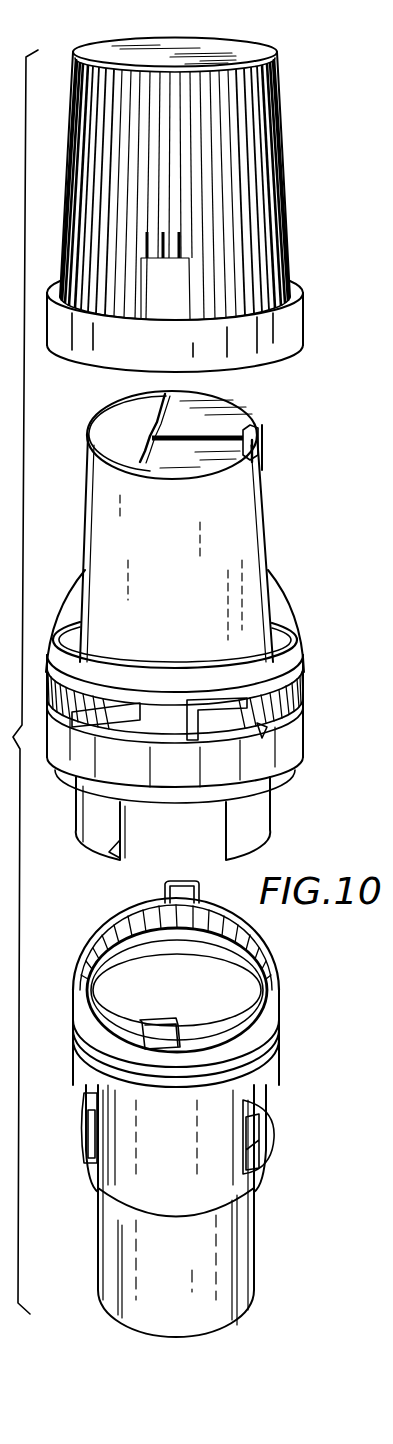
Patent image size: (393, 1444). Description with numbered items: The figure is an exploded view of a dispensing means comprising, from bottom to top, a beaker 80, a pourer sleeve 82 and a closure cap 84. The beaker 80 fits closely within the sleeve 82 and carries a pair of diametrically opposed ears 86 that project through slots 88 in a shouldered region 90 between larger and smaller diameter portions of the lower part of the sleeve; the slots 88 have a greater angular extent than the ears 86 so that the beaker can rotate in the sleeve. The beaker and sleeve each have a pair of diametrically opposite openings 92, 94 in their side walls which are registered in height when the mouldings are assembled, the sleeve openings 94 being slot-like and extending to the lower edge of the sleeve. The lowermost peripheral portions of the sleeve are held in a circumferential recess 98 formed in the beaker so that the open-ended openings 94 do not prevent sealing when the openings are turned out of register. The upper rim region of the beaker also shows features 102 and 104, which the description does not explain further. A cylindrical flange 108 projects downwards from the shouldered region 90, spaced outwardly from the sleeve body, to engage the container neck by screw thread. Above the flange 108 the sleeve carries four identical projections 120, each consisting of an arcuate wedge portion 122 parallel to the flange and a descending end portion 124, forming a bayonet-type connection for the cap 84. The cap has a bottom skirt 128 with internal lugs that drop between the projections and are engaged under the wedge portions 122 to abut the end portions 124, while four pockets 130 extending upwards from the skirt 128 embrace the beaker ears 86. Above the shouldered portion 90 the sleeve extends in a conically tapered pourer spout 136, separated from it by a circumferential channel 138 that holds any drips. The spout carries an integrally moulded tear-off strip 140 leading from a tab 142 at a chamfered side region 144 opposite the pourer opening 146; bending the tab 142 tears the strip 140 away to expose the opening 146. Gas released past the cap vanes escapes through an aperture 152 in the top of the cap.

The beaker 80 is at (107, 1247).
The pourer sleeve 82 is at (98, 850).
The closure cap 84 is at (247, 132).
The ears 86 is at (177, 1028).
The slots 88 is at (105, 680).
The shouldered region 90 is at (280, 658).
The beaker openings 92 is at (85, 1093).
The sleeve openings 94 is at (110, 852).
The circumferential recess 98 is at (260, 1155).
The inner ribs 102 is at (263, 963).
The ridges 104 is at (257, 1073).
The cylindrical flange 108 is at (258, 747).
The projections 120 is at (230, 737).
The arcuate wedge portion 122 is at (100, 709).
The descending end portion 124 is at (200, 740).
The bottom skirt 128 is at (263, 343).
The pockets 130 is at (165, 298).
The pourer spout 136 is at (108, 535).
The circumferential channel 138 is at (83, 597).
The tear-off strip 140 is at (182, 447).
The tab 142 is at (263, 448).
The chamfered side region 144 is at (252, 460).
The pourer opening 146 is at (118, 435).
The aperture 152 is at (92, 37).